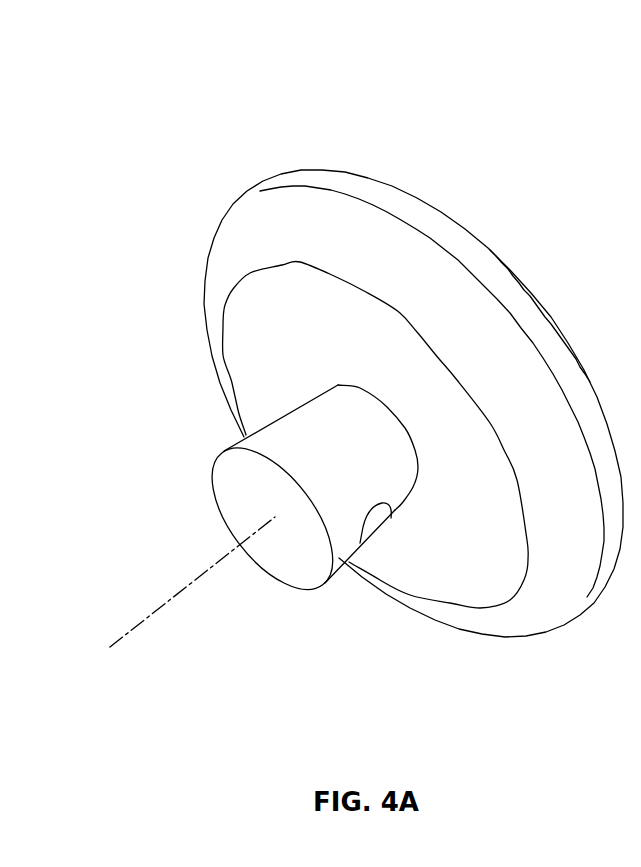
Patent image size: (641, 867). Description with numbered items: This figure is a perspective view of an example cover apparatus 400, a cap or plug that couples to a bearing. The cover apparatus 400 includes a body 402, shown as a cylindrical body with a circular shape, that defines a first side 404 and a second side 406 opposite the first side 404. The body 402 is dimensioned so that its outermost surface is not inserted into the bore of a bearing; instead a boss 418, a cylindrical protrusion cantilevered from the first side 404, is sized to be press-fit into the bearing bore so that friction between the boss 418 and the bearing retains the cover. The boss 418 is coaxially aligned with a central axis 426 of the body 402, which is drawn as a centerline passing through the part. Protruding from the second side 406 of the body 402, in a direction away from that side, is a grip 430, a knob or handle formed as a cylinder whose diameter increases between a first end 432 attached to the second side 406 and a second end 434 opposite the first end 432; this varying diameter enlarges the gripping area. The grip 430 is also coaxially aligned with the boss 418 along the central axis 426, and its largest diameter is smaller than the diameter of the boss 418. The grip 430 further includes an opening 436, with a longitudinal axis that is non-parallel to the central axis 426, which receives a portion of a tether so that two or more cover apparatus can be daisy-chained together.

The cover apparatus 400 is at (211, 57).
The body 402 is at (237, 233).
The first side 404 is at (490, 134).
The second side 406 is at (335, 665).
The boss 418 is at (533, 290).
The central axis 426 is at (172, 598).
The grip 430 is at (284, 541).
The first end 432 is at (398, 416).
The second end 434 is at (227, 485).
The opening 436 is at (391, 518).